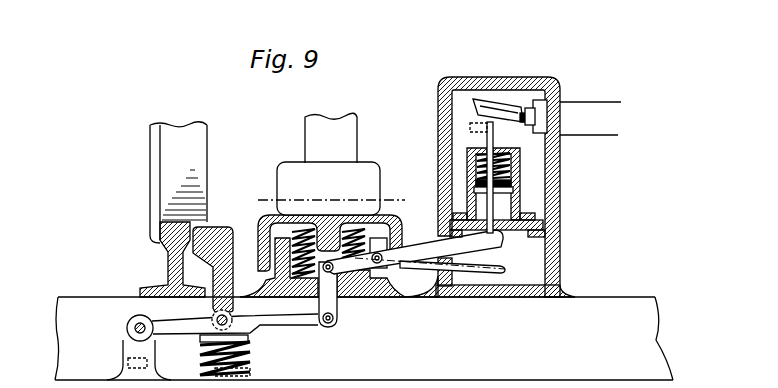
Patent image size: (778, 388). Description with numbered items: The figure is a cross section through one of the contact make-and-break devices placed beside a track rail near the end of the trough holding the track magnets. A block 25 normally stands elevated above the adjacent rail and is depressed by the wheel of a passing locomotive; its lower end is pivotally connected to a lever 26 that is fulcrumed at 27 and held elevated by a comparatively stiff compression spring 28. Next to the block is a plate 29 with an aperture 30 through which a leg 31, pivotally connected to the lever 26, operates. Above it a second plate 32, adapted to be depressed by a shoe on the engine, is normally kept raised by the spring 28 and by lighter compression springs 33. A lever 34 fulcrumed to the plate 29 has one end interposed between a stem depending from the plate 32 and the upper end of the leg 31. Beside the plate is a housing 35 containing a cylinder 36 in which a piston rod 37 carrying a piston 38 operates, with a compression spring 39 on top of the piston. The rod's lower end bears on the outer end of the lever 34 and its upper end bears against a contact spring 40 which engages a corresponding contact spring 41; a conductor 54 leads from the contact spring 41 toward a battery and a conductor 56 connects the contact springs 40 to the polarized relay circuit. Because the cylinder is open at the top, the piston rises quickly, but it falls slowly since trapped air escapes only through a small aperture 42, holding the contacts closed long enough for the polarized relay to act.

The block 25 is at (215, 237).
The lever 26 is at (283, 320).
The fulcrum 27 is at (137, 330).
The compression spring 28 is at (200, 355).
The plate 29 is at (377, 298).
The aperture 30 is at (342, 285).
The leg 31 is at (326, 305).
The second plate 32 is at (368, 222).
The compression springs 33 is at (298, 229).
The lever 34 is at (473, 245).
The housing 35 is at (560, 180).
The cylinder 36 is at (520, 165).
The piston rod 37 is at (493, 206).
The piston 38 is at (440, 195).
The compression spring 39 is at (467, 160).
The contact spring 40 is at (477, 114).
The contact spring 41 is at (482, 102).
The aperture 42 is at (513, 200).
The conductor 54 is at (603, 102).
The conductor 56 is at (618, 135).